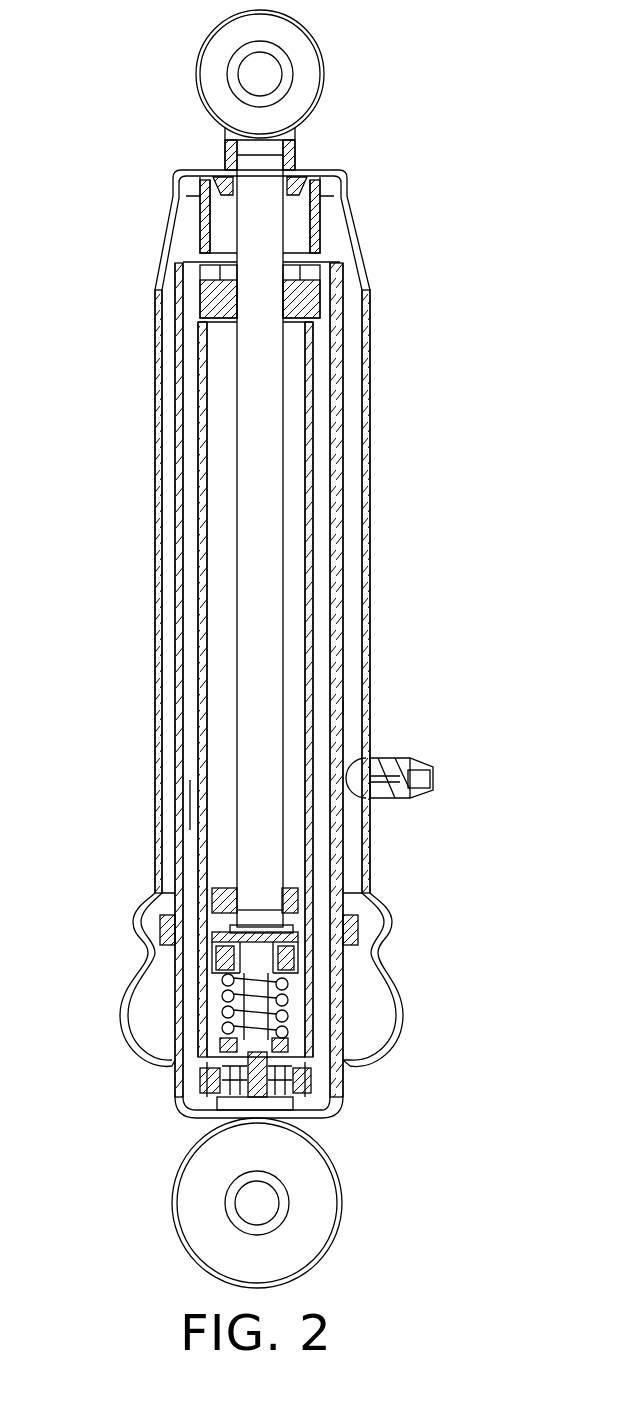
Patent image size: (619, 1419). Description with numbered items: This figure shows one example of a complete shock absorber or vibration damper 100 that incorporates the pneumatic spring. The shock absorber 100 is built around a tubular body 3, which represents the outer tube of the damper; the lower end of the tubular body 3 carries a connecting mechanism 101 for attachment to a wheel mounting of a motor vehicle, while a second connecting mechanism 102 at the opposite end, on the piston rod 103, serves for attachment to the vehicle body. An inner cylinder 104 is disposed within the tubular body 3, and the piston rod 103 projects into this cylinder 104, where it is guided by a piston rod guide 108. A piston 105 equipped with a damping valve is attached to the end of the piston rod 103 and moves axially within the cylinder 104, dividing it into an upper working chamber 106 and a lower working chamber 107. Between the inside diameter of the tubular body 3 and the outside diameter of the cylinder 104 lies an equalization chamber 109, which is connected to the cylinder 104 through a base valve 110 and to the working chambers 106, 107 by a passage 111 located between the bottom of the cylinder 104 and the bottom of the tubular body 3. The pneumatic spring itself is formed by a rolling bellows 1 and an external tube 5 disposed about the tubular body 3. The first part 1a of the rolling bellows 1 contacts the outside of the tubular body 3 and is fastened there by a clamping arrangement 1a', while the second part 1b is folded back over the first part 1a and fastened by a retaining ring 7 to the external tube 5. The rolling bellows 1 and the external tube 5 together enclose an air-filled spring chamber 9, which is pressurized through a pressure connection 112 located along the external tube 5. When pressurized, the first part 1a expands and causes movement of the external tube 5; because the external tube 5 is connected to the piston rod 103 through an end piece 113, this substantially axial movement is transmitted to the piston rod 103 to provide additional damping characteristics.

The shock absorber 100 is at (80, 652).
The connecting mechanism 102 is at (302, 53).
The end piece 113 is at (313, 174).
The clamping arrangement 1a' is at (309, 179).
The piston rod 103 is at (268, 213).
The piston rod guide 108 is at (347, 285).
The inner cylinder 104 is at (320, 598).
The external tube 5 is at (370, 623).
The tubular body 3 is at (345, 707).
The pressure connection 112 is at (395, 758).
The equalization chamber 109 is at (193, 803).
The upper working chamber 106 is at (300, 862).
The retaining ring 7 is at (378, 920).
The spring chamber 9 is at (376, 993).
The second part of the rolling bellows 1b is at (398, 1010).
The rolling bellows 1 is at (475, 1001).
The piston 105 is at (218, 962).
The first part of the rolling bellows 1a is at (127, 980).
The lower working chamber 107 is at (222, 1057).
The base valve 110 is at (200, 1075).
The passage 111 is at (208, 1118).
The connecting mechanism 101 is at (313, 1157).